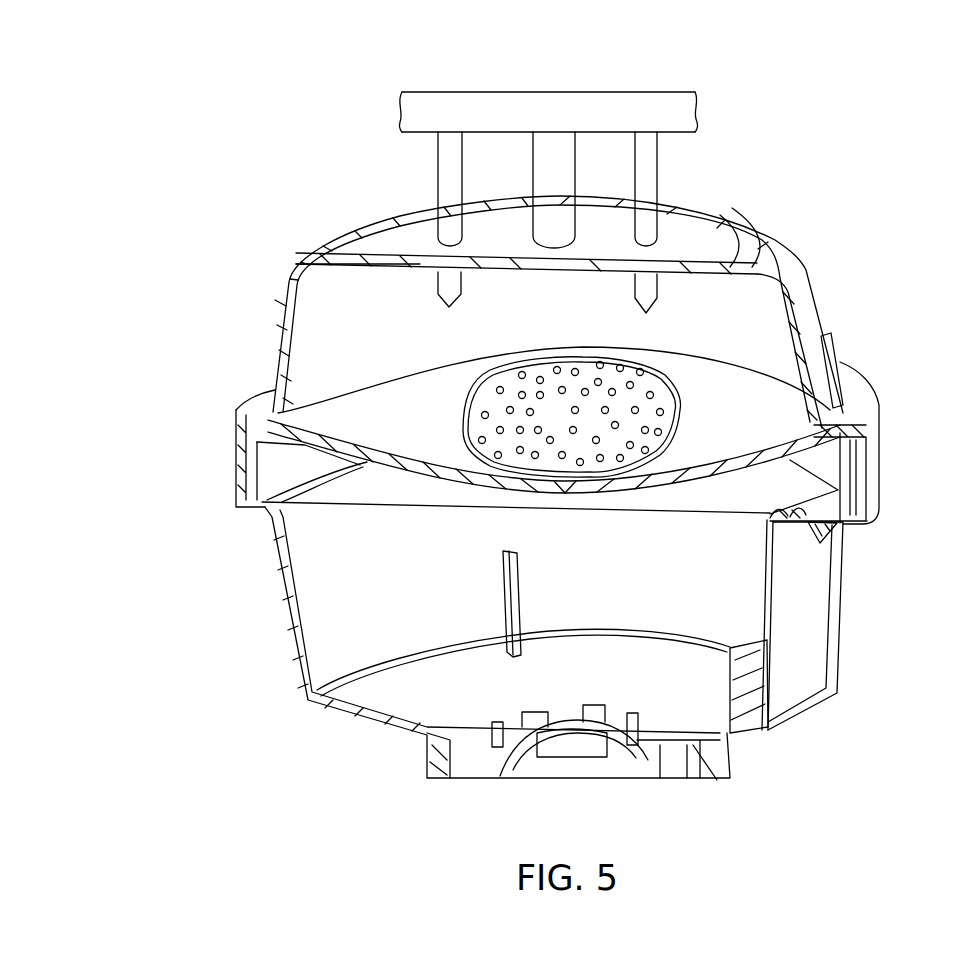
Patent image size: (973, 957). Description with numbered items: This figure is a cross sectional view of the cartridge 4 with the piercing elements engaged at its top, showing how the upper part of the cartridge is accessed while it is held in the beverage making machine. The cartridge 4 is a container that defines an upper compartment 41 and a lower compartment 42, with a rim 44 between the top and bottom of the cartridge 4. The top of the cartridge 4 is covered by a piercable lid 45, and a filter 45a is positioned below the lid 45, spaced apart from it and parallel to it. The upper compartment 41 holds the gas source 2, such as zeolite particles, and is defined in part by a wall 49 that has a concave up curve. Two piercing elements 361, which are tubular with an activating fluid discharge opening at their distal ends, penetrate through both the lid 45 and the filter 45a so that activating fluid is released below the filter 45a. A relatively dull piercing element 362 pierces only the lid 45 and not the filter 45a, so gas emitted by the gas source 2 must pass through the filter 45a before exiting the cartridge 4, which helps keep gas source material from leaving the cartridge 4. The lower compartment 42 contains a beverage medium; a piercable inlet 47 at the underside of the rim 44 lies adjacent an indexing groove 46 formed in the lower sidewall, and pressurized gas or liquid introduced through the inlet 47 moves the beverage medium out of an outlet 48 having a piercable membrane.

The cartridge 4 is at (142, 116).
The piercing element 362 is at (552, 160).
The piercing elements 361 is at (448, 183).
The lid 45 is at (690, 265).
The filter 45a is at (416, 268).
The upper compartment 41 is at (832, 342).
The gas source 2 is at (478, 412).
The rim 44 is at (870, 476).
The wall 49 is at (410, 470).
The lower compartment 42 is at (297, 657).
The indexing groove 46 is at (826, 630).
The piercable inlet 47 is at (823, 530).
The outlet 48 is at (580, 780).